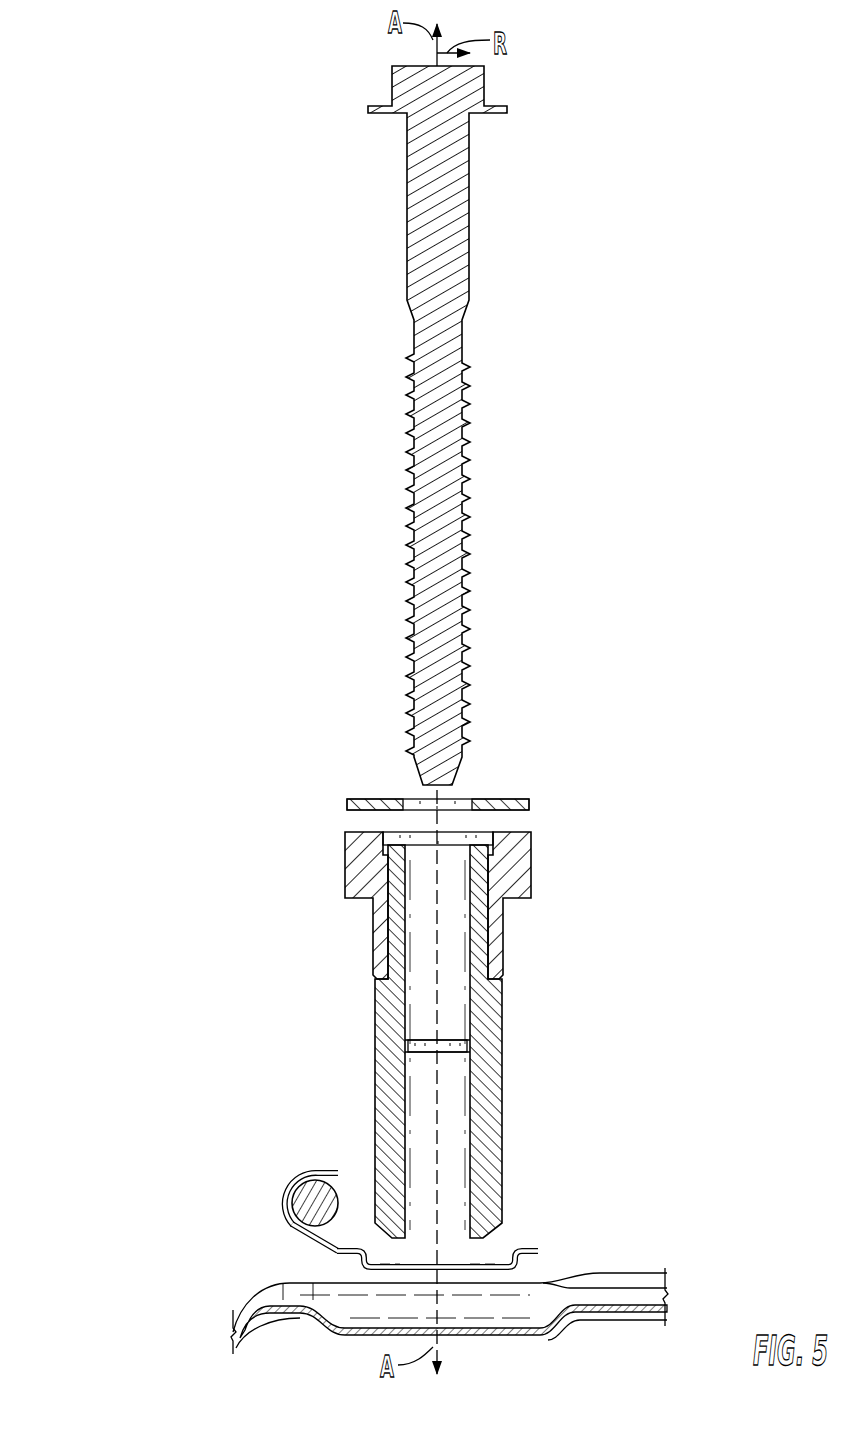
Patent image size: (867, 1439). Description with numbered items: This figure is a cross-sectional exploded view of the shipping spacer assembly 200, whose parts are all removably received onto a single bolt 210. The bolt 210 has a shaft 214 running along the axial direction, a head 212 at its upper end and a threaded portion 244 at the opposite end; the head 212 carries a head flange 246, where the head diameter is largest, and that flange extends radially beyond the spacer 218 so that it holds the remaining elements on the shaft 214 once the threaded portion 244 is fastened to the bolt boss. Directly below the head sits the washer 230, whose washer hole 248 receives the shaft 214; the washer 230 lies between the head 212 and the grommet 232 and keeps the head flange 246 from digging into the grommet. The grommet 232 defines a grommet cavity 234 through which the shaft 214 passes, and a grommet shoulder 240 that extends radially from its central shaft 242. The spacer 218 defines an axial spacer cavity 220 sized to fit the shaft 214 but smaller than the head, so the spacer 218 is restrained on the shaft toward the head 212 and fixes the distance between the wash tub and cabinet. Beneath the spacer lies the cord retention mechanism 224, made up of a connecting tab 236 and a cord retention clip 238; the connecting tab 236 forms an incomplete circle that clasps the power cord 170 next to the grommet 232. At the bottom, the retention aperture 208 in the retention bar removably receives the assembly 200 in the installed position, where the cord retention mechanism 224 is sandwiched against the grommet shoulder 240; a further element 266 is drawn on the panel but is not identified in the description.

The shipping spacer assembly 200 is at (140, 170).
The head 212 is at (454, 407).
The head flange 246 is at (469, 424).
The shaft 214 is at (454, 407).
The bolt 210 is at (454, 407).
The threaded portion 244 is at (462, 583).
The washer hole 248 is at (418, 794).
The washer 230 is at (469, 778).
The grommet cavity 234 is at (462, 832).
The grommet 232 is at (435, 912).
The grommet shoulder 240 is at (473, 912).
The central shaft 242 is at (473, 912).
The spacer 218 is at (478, 1050).
The spacer cavity 220 is at (457, 1241).
The cord retention clip 238 is at (303, 1175).
The power cord 170 is at (302, 1208).
The cord retention mechanism 224 is at (308, 1250).
The connecting tab 236 is at (539, 1253).
The retention aperture 208 is at (468, 1327).
The panel sheet 266 is at (635, 1318).